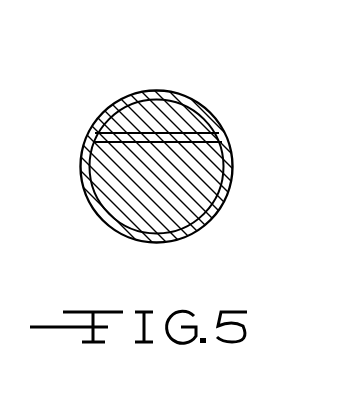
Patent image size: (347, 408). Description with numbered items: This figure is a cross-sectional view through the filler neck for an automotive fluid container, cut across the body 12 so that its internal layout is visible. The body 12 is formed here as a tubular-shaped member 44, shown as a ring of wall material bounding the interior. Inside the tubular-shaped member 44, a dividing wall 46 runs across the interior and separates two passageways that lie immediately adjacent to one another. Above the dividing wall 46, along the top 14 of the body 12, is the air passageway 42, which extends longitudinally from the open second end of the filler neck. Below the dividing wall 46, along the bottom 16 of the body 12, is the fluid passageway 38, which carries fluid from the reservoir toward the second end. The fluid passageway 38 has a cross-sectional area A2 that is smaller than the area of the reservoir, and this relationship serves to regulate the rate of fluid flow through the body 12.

The body 12 is at (208, 218).
The top 14 is at (155, 92).
The bottom 16 is at (157, 243).
The fluid passageway 38 is at (188, 185).
The air passageway 42 is at (192, 120).
The tubular-shaped member 44 is at (104, 122).
The dividing wall 46 is at (160, 143).
The area of the fluid passageway A2 is at (115, 190).